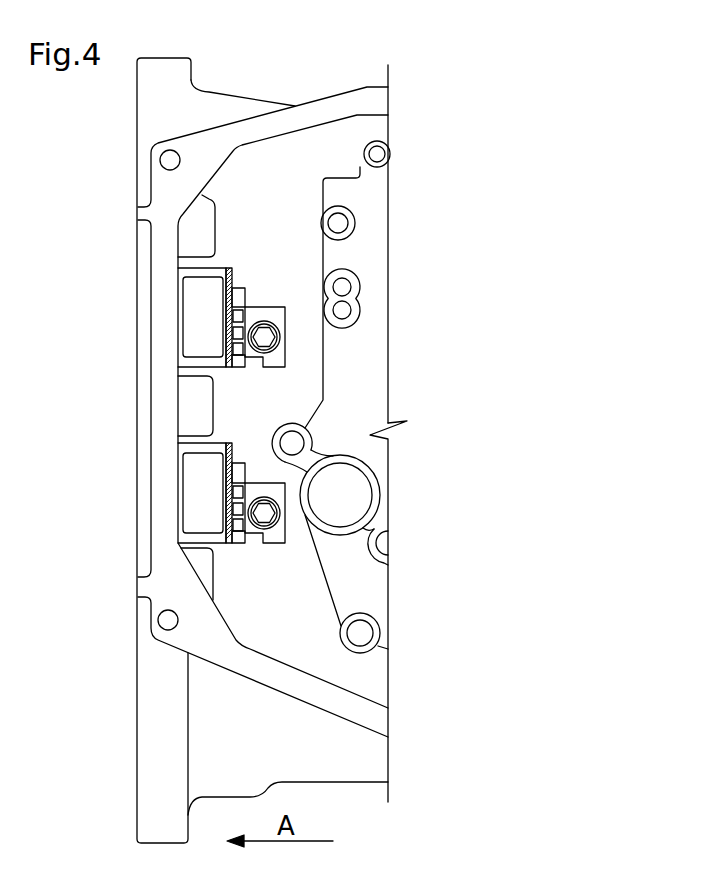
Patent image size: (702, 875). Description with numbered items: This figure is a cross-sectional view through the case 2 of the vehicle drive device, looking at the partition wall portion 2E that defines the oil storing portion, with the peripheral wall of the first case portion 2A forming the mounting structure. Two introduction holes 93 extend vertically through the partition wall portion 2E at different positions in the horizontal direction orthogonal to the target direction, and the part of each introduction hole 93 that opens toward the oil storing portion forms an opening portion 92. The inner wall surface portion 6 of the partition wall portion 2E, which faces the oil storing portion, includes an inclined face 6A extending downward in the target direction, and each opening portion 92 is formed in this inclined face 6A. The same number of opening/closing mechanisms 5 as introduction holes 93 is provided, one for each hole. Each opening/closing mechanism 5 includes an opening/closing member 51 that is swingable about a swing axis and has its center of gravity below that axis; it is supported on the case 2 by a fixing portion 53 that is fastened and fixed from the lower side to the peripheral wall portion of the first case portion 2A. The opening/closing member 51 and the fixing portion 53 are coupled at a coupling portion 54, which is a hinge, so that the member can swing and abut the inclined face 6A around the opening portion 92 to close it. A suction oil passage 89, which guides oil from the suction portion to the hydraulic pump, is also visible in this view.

The first case portion 2A is at (318, 107).
The case 2 is at (272, 419).
The partition wall portion 2E is at (195, 437).
The opening/closing mechanism 5 is at (232, 414).
The opening/closing member 51 is at (233, 276).
The fixing portion 53 is at (280, 355).
The coupling portion 54 is at (236, 465).
The inclined face 6A is at (197, 538).
The inner wall surface portion 6 is at (219, 450).
The suction oil passage 89 is at (357, 518).
The opening portion 92 is at (197, 318).
The introduction hole 93 is at (187, 308).